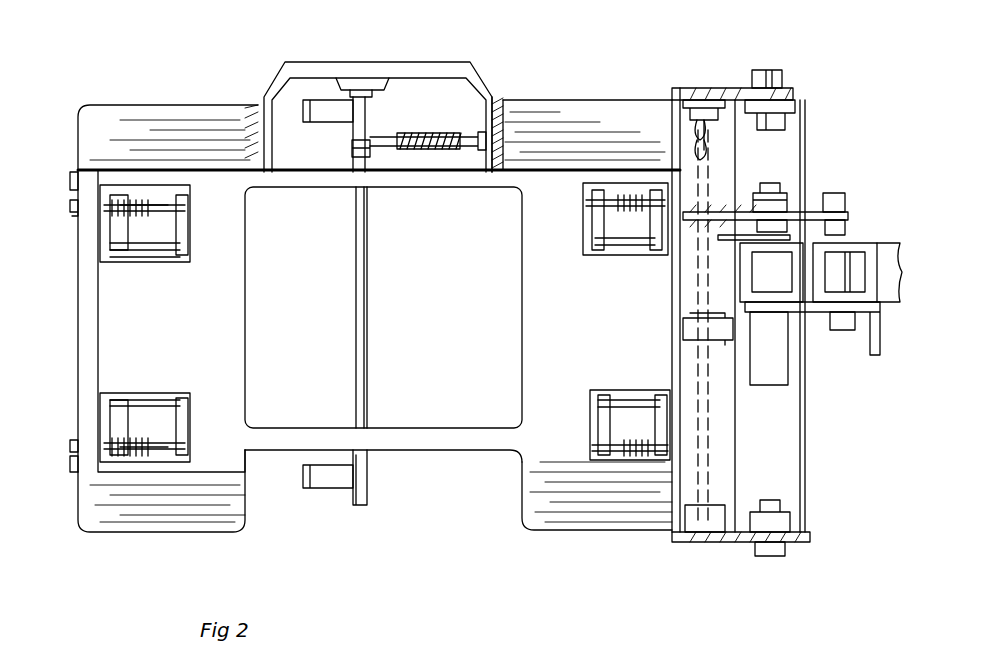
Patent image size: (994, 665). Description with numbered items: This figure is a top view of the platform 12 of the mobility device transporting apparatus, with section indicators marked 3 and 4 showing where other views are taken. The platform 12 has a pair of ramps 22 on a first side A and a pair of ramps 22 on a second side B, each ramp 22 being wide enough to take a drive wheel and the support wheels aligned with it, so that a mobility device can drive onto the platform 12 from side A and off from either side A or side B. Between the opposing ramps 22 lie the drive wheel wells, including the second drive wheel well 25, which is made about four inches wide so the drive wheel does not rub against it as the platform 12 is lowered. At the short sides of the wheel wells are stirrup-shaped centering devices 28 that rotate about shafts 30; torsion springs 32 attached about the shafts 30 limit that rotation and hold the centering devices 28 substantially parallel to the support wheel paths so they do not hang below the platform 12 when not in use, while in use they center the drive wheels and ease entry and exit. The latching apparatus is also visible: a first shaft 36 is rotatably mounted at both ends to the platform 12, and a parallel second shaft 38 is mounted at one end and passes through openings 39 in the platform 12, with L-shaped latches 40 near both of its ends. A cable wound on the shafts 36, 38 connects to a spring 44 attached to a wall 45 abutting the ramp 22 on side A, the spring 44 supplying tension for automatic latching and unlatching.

The platform 12 is at (271, 44).
The ramps 22 is at (127, 118).
The second drive wheel well 25 is at (118, 343).
The centering devices 28 is at (130, 258).
The shafts 30 is at (160, 205).
The torsion springs 32 is at (125, 455).
The first shaft 36 is at (700, 478).
The second shaft 38 is at (368, 310).
The openings 39 is at (368, 165).
The L-shaped latches 40 is at (322, 103).
The spring 44 is at (427, 132).
The wall 45 is at (480, 110).
The first side A is at (398, 62).
The second side B is at (452, 452).
The section line 3- 3 is at (583, 588).
The section line 4- 4 is at (612, 135).